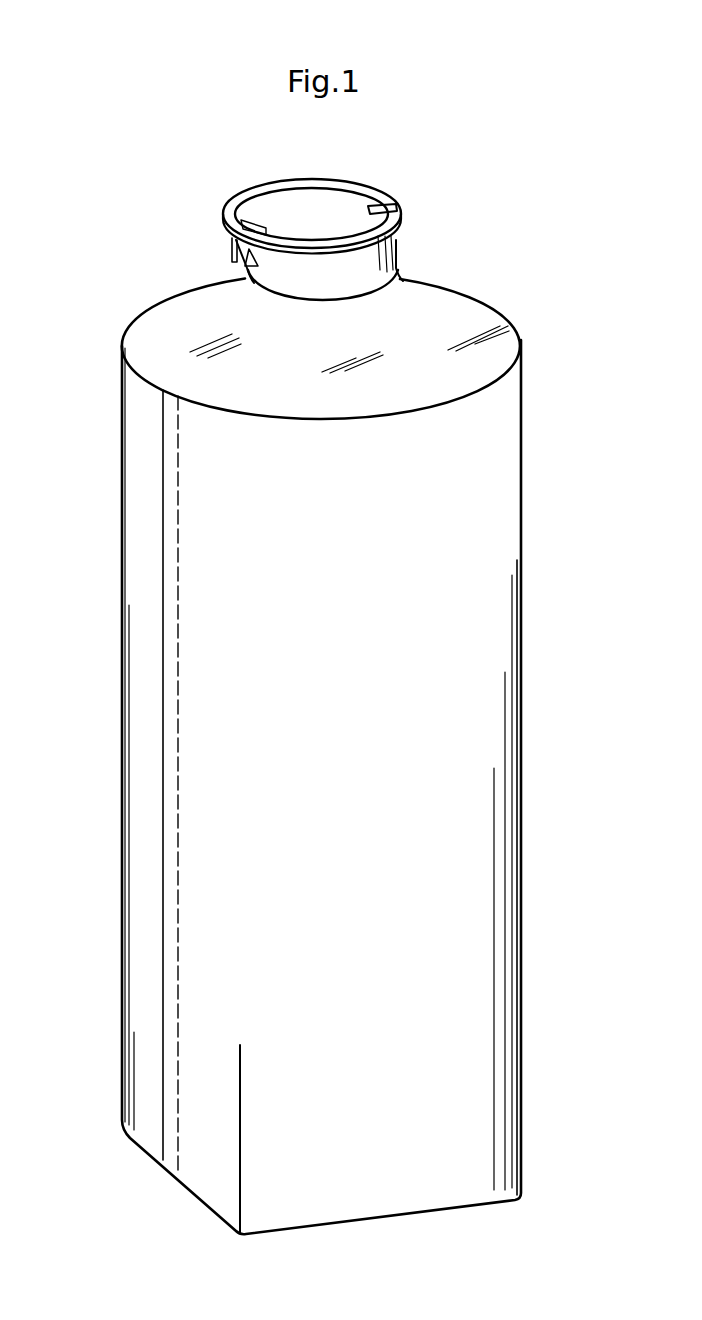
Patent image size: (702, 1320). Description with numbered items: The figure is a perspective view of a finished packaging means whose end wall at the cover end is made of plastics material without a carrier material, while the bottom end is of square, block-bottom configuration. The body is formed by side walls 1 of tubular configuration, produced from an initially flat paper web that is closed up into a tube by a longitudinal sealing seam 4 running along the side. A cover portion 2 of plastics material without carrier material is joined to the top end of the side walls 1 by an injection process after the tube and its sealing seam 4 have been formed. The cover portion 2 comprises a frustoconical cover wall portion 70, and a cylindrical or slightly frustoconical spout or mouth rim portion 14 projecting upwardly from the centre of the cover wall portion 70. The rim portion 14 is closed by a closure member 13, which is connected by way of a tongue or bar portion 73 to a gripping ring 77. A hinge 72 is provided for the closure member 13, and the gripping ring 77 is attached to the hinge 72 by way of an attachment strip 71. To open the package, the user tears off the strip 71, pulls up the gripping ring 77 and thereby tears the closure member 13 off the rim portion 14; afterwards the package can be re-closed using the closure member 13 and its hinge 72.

The side walls 1 is at (527, 608).
The cover portion 2 is at (450, 258).
The longitudinal sealing seam 4 is at (172, 585).
The closure member 13 is at (283, 212).
The rim portion 14 is at (370, 263).
The cover wall portion 70 is at (290, 382).
The attachment strip 71 is at (232, 248).
The hinge 72 is at (252, 266).
The tongue or bar portion 73 is at (385, 203).
The gripping ring 77 is at (230, 210).